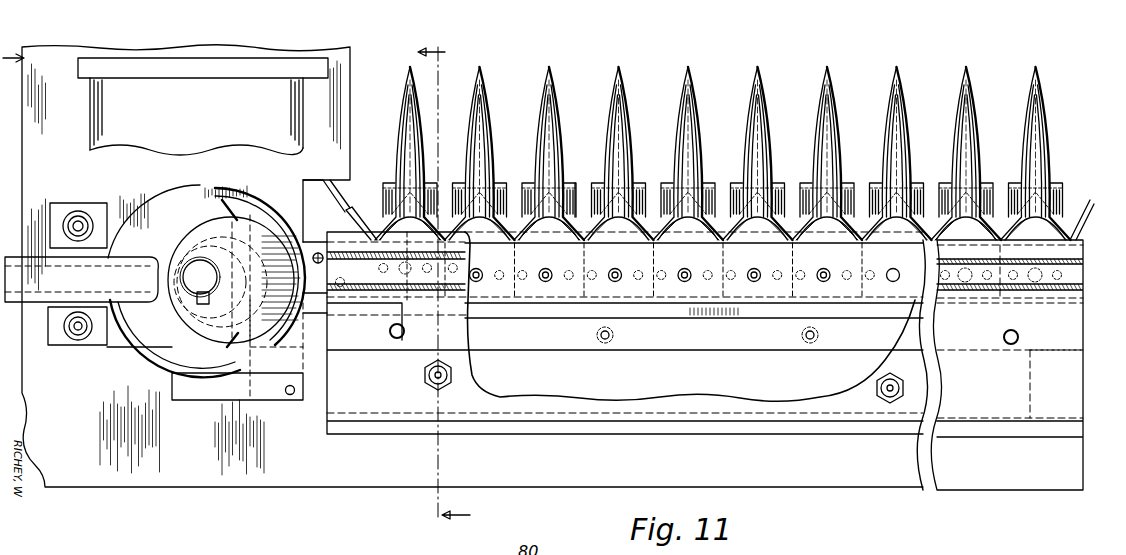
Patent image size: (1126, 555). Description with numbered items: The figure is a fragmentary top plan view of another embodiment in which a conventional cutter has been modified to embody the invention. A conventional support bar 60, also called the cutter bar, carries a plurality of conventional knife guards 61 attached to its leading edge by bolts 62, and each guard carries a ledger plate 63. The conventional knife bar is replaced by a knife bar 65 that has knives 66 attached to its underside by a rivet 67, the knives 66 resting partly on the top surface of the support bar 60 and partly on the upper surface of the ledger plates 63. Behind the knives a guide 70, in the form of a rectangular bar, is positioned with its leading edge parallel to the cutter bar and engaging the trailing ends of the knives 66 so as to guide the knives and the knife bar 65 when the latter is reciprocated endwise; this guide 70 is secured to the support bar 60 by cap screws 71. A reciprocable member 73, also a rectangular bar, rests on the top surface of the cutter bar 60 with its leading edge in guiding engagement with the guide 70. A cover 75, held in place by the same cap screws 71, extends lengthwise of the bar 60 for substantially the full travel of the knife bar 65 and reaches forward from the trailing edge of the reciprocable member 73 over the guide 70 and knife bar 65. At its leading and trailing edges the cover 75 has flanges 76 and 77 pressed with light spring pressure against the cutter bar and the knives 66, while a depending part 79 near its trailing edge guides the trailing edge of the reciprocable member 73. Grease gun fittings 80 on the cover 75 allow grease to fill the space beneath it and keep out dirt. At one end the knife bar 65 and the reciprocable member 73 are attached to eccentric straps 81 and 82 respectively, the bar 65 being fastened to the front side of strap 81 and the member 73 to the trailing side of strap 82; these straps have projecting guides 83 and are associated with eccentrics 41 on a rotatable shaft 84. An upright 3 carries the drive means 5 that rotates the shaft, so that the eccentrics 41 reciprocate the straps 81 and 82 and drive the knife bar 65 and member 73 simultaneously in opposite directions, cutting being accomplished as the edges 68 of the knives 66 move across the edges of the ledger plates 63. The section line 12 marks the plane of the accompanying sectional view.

The upright 3 is at (143, 68).
The drive means 5 is at (244, 116).
The section line 12- 12 is at (459, 287).
The eccentrics 41 is at (148, 235).
The support bar 60 is at (345, 452).
The knife guards 61 is at (545, 135).
The bolts 62 is at (708, 270).
The ledger plate 63 is at (505, 183).
The knife bar 65 is at (740, 263).
The knives 66 is at (640, 365).
The rivet 67 is at (545, 272).
The edges 68 is at (585, 183).
The guide 70 is at (1055, 355).
The cap screws 71 is at (389, 331).
The reciprocable member 73 is at (707, 360).
The cover 75 is at (392, 370).
The flange 76 is at (632, 427).
The flange 77 is at (355, 237).
The depending part 79 is at (765, 432).
The grease gun fittings 80 is at (450, 382).
The eccentric strap 81 is at (316, 252).
The eccentric strap 82 is at (280, 400).
The projecting guides 83 is at (70, 275).
The rotatable shaft 84 is at (200, 275).